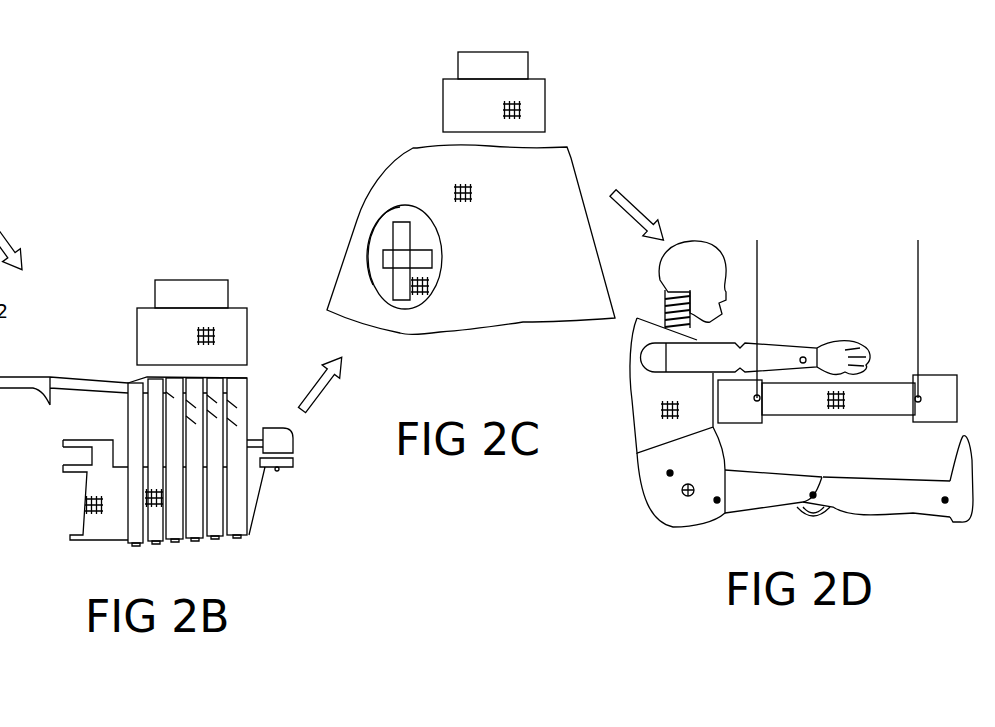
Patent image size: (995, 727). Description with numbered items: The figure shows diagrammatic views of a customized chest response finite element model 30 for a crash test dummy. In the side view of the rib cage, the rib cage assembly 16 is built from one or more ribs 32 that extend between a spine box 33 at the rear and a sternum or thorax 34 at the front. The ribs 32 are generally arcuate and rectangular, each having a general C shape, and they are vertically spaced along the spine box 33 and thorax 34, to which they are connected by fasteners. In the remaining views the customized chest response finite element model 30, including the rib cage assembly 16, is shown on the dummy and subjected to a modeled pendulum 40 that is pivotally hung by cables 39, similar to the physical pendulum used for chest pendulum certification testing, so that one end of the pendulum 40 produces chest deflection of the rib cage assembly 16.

In FIG. 2B, the rib cage assembly 16 is at (268, 530).
In FIG. 2C, the rib cage assembly 16 is at (370, 272).
In FIG. 2B, the customized chest response finite element model 30 is at (126, 368).
In FIG. 2C, the customized chest response finite element model 30 is at (410, 135).
In FIG. 2D, the customized chest response finite element model 30 is at (618, 438).
In FIG. 2B, the ribs 32 is at (220, 417).
In FIG. 2B, the spine box 33 is at (100, 534).
In FIG. 2B, the thorax 34 is at (103, 386).
In FIG. 2D, the cables 39 is at (757, 267).
In FIG. 2B, the pendulum 40 is at (230, 293).
In FIG. 2C, the pendulum 40 is at (530, 67).
In FIG. 2D, the pendulum 40 is at (900, 380).